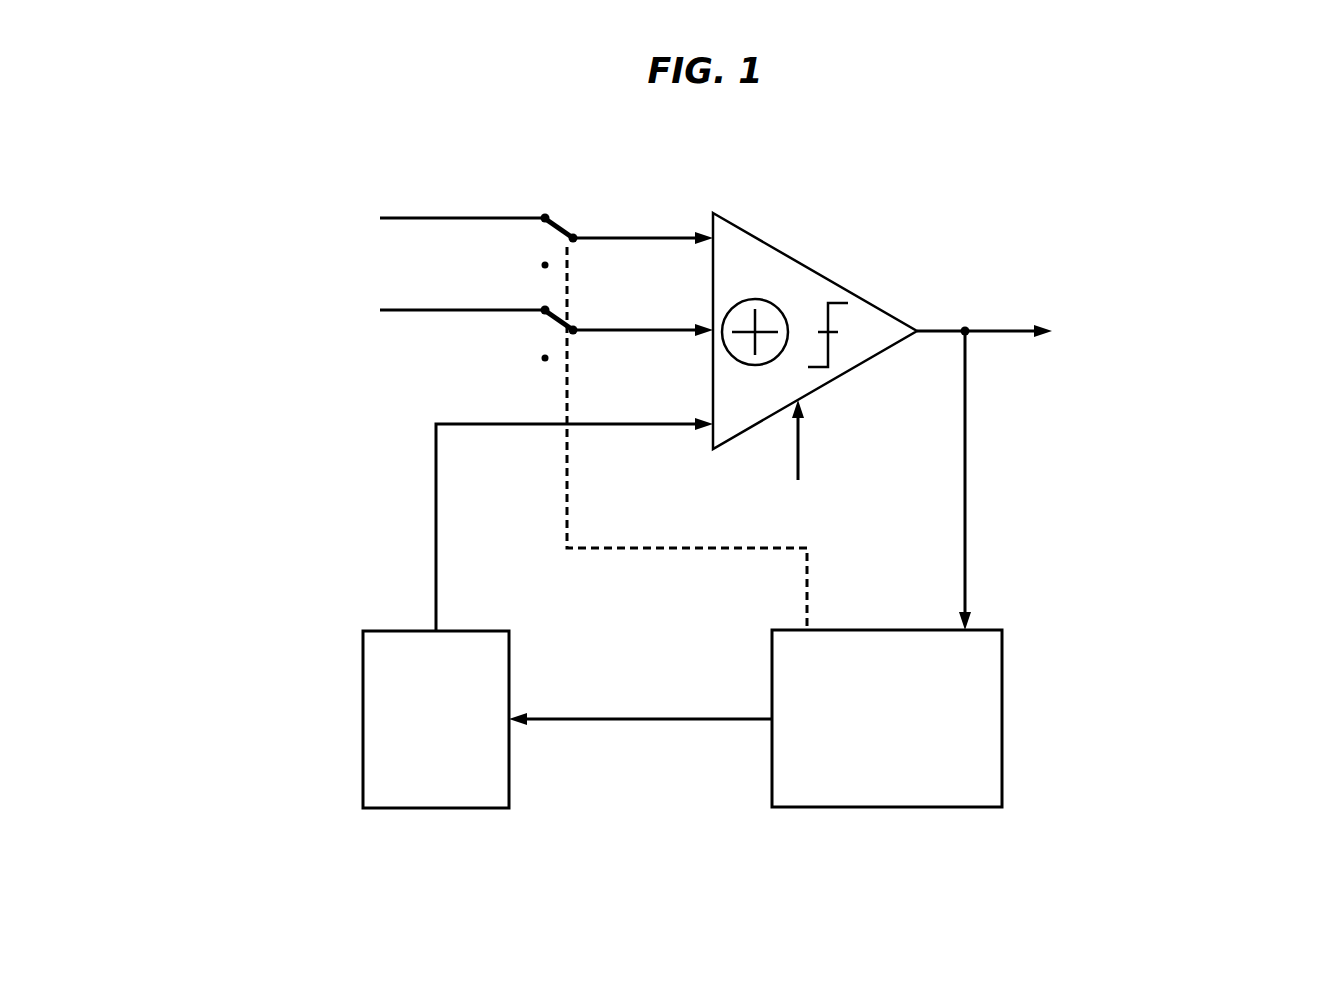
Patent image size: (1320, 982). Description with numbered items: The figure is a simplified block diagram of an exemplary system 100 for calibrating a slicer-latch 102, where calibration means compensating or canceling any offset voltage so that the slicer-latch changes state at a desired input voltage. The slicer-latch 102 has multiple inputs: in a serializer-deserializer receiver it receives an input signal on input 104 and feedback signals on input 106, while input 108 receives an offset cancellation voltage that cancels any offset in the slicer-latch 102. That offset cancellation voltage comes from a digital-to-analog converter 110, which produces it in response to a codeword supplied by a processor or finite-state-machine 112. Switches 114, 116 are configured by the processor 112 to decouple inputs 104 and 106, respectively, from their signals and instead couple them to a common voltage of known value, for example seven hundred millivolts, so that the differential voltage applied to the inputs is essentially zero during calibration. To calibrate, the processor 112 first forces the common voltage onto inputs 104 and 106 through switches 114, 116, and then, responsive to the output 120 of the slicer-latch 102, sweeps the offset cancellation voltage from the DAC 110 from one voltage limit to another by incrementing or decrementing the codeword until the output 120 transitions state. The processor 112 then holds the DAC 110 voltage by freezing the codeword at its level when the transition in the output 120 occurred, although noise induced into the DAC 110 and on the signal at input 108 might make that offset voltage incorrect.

The system 100 is at (892, 162).
The slicer-latch 102 is at (805, 262).
The input 104 is at (629, 238).
The input 106 is at (629, 330).
The input 108 is at (629, 427).
The digital-to-analog converter 110 is at (510, 662).
The processor 112 is at (1003, 663).
The switch 114 is at (571, 233).
The switch 116 is at (550, 340).
The output 120 is at (993, 331).